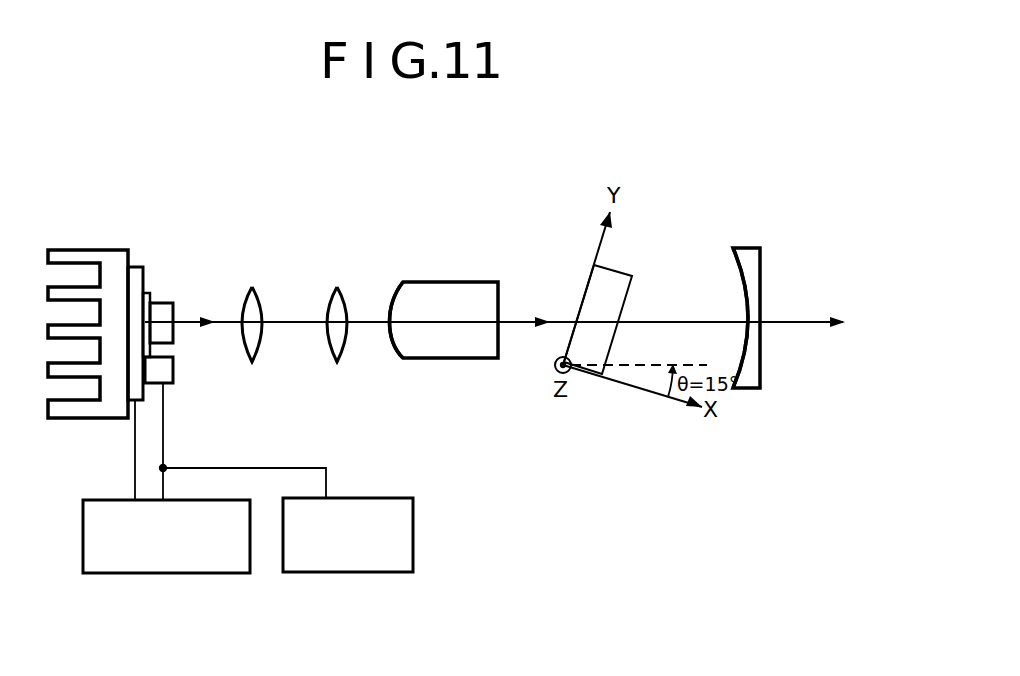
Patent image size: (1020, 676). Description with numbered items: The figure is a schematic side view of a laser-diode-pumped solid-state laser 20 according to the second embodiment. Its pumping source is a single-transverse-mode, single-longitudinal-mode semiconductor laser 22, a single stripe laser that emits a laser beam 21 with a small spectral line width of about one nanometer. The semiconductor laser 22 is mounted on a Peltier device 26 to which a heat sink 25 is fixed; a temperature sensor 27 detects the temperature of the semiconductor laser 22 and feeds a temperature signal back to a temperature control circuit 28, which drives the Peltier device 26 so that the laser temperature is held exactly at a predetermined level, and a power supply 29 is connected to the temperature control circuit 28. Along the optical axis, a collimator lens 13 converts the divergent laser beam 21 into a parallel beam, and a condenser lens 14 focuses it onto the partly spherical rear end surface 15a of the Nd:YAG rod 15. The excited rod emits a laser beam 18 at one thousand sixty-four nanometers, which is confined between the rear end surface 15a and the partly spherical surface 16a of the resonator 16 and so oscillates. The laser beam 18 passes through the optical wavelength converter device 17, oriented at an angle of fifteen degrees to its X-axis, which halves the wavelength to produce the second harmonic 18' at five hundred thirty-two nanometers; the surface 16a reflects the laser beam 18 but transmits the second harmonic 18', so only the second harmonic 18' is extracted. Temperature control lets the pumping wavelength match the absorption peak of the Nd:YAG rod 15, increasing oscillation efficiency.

The collimator lens 13 is at (260, 292).
The condenser lens 14 is at (343, 290).
The Nd:YAG rod 15 is at (445, 282).
The rear end surface 15a is at (393, 342).
The resonator 16 is at (753, 267).
The partly spherical surface 16a is at (735, 263).
The optical wavelength converter device 17 is at (608, 283).
The laser beam 18 is at (495, 293).
The second harmonic 18' is at (801, 291).
The laser-diode-pumped solid-state laser 20 is at (536, 184).
The laser beam 21 is at (285, 326).
The single-transverse-mode, single-longitudinal-mode semiconductor laser 22 is at (172, 302).
The heat sink 25 is at (87, 250).
The Peltier device 26 is at (145, 267).
The temperature sensor 27 is at (163, 368).
The temperature control circuit 28 is at (203, 575).
The power supply 29 is at (352, 573).